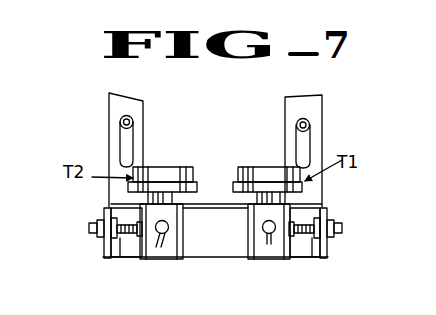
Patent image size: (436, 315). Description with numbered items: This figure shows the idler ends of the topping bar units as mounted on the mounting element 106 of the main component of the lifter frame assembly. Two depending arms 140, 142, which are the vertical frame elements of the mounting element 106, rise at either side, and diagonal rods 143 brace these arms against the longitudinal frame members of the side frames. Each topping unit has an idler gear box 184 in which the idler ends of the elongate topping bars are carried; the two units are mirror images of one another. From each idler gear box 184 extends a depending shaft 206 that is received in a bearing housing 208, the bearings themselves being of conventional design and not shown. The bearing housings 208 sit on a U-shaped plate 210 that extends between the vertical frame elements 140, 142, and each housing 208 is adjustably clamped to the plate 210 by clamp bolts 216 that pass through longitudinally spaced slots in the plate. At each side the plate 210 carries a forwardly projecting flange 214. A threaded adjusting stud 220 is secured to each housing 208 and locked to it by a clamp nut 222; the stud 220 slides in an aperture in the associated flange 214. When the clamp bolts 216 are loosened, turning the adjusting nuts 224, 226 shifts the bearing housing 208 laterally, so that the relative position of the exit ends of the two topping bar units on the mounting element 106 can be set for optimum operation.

The mounting element 106 is at (325, 102).
The depending arm 140 is at (290, 96).
The depending arm 142 is at (143, 102).
The diagonal rod 143 is at (298, 135).
The idler gear box 184 is at (262, 168).
The depending shaft 206 is at (163, 207).
The bearing housing 208 is at (250, 259).
The U-shaped plate 210 is at (122, 252).
The forwardly projecting flange 214 is at (105, 256).
The clamp bolt 216 is at (153, 259).
The threaded adjusting stud 220 is at (89, 228).
The clamp nut 222 is at (134, 217).
The adjusting nut 224 is at (111, 213).
The adjusting nut 226 is at (100, 237).